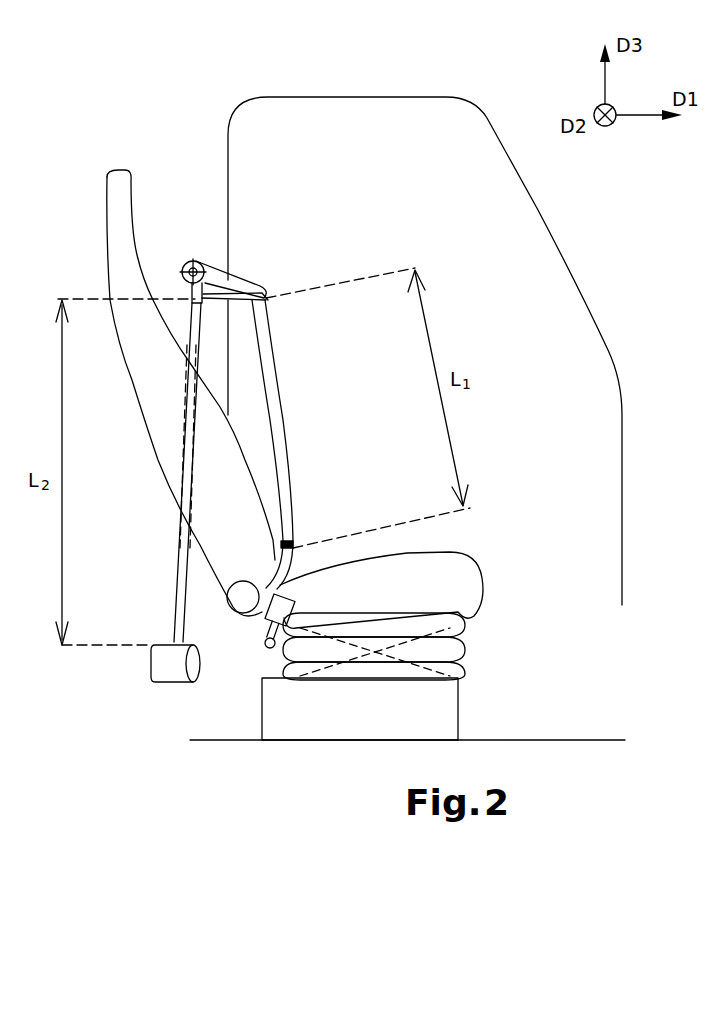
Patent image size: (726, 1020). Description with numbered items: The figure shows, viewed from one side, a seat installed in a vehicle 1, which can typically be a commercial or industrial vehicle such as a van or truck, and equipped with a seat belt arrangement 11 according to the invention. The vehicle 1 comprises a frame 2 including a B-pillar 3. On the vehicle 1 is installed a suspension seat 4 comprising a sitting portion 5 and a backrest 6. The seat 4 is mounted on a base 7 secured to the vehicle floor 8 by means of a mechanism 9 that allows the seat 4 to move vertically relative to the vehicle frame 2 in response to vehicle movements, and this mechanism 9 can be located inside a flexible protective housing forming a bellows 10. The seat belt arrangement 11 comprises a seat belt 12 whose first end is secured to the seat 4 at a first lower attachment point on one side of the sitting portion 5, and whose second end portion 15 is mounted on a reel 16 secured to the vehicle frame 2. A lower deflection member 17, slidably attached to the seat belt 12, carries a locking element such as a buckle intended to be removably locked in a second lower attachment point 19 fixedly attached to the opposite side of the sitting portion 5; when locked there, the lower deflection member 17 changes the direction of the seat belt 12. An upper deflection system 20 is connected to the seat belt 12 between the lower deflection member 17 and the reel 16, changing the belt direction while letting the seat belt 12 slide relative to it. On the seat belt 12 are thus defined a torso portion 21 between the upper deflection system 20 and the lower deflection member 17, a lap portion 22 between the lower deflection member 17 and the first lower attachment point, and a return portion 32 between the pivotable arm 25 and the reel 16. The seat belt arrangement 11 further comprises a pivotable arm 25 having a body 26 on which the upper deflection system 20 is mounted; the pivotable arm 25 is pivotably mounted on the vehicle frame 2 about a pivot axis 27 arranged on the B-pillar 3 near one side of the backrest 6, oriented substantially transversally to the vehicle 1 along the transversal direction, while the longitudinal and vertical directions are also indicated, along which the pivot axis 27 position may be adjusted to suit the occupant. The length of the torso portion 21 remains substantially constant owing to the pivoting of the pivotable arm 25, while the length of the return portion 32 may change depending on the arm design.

The vehicle 1 is at (574, 206).
The frame 2 is at (500, 140).
The B-pillar 3 is at (212, 154).
The suspension seat 4 is at (141, 389).
The sitting portion 5 is at (455, 578).
The backrest 6 is at (118, 205).
The base 7 is at (430, 705).
The floor 8 is at (582, 740).
The mechanism 9 is at (462, 615).
The bellows 10 is at (412, 635).
The seat belt arrangement 11 is at (305, 441).
The seat belt 12 is at (140, 502).
The second end portion 15 is at (173, 640).
The reel 16 is at (165, 668).
The lower deflection member 17 is at (290, 540).
The second lower attachment point 19 is at (290, 600).
The upper deflection system 20 is at (280, 311).
The torso portion 21 is at (275, 414).
The lap portion 22 is at (289, 569).
The pivotable arm 25 is at (265, 242).
The body 26 is at (217, 260).
The pivot axis 27 is at (185, 262).
The return portion 32 is at (177, 585).